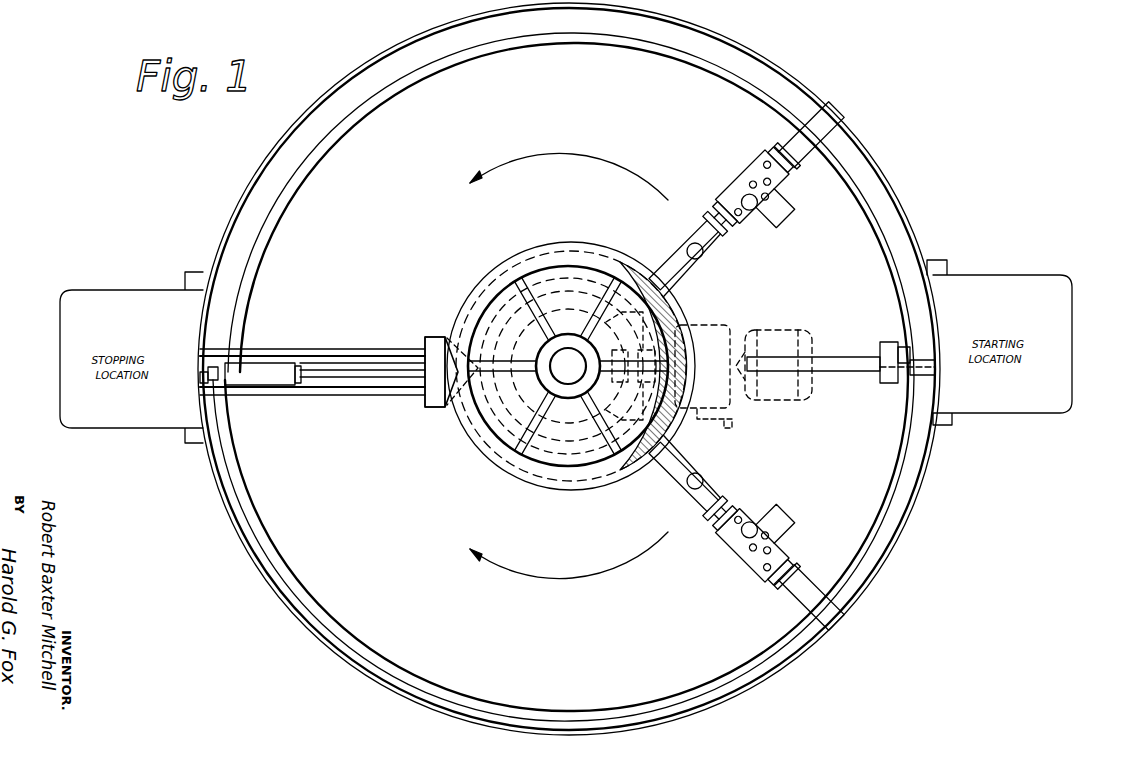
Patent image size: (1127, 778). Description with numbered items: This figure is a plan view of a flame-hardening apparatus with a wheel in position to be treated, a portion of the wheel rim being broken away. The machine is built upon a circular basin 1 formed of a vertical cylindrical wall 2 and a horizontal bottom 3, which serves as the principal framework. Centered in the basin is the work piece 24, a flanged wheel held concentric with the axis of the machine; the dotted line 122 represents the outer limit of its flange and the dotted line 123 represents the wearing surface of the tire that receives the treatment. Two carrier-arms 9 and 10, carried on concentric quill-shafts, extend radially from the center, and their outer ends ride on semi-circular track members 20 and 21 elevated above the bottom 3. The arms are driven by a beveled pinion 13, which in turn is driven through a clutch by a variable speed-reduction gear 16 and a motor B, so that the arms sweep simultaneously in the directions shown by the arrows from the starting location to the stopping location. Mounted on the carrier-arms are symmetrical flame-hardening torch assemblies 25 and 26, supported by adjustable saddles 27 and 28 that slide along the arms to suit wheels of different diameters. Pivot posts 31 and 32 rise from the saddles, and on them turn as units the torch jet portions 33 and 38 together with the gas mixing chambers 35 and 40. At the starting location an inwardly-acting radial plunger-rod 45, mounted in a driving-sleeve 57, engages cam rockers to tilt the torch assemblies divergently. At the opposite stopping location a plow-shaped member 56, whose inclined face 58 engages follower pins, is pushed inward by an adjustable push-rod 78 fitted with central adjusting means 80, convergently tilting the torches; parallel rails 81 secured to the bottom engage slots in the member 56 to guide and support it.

The circular basin 1 is at (798, 70).
The horizontal bottom 3 is at (380, 70).
The semi-circular track member 20 is at (528, 48).
The semi-circular track member 21 is at (584, 710).
The work piece 24 is at (578, 258).
The beveled pinion 13 is at (618, 354).
The dotted line representing outer limit of the flange 122 is at (698, 367).
The dotted line representing wearing surface of the tire 123 is at (683, 320).
The carrier-arm 10 is at (744, 201).
The carrier-arm 9 is at (749, 524).
The flame-hardening torch assembly 26 is at (727, 193).
The flame-hardening torch assembly 25 is at (722, 538).
The pivot post 32 is at (690, 247).
The pivot post 31 is at (692, 488).
The torch jet portion 38 is at (660, 276).
The torch jet portion 33 is at (660, 458).
The gas mixing chamber 40 is at (755, 215).
The gas mixing chamber 35 is at (758, 510).
The adjustable saddle 28 is at (727, 245).
The adjustable saddle 27 is at (727, 488).
The variable speed-reduction gear 16 is at (718, 328).
The motor B is at (773, 330).
The plunger-rod 45 is at (832, 356).
The driving-sleeve 57 is at (905, 345).
The plow-shaped member 56 is at (424, 336).
The inclined face 58 is at (446, 334).
The adjustable push-rod 78 is at (255, 365).
The adjusting means 80 is at (298, 386).
The parallel rails 81 is at (292, 351).
The vertical cylindrical wall 2 is at (10, 377).